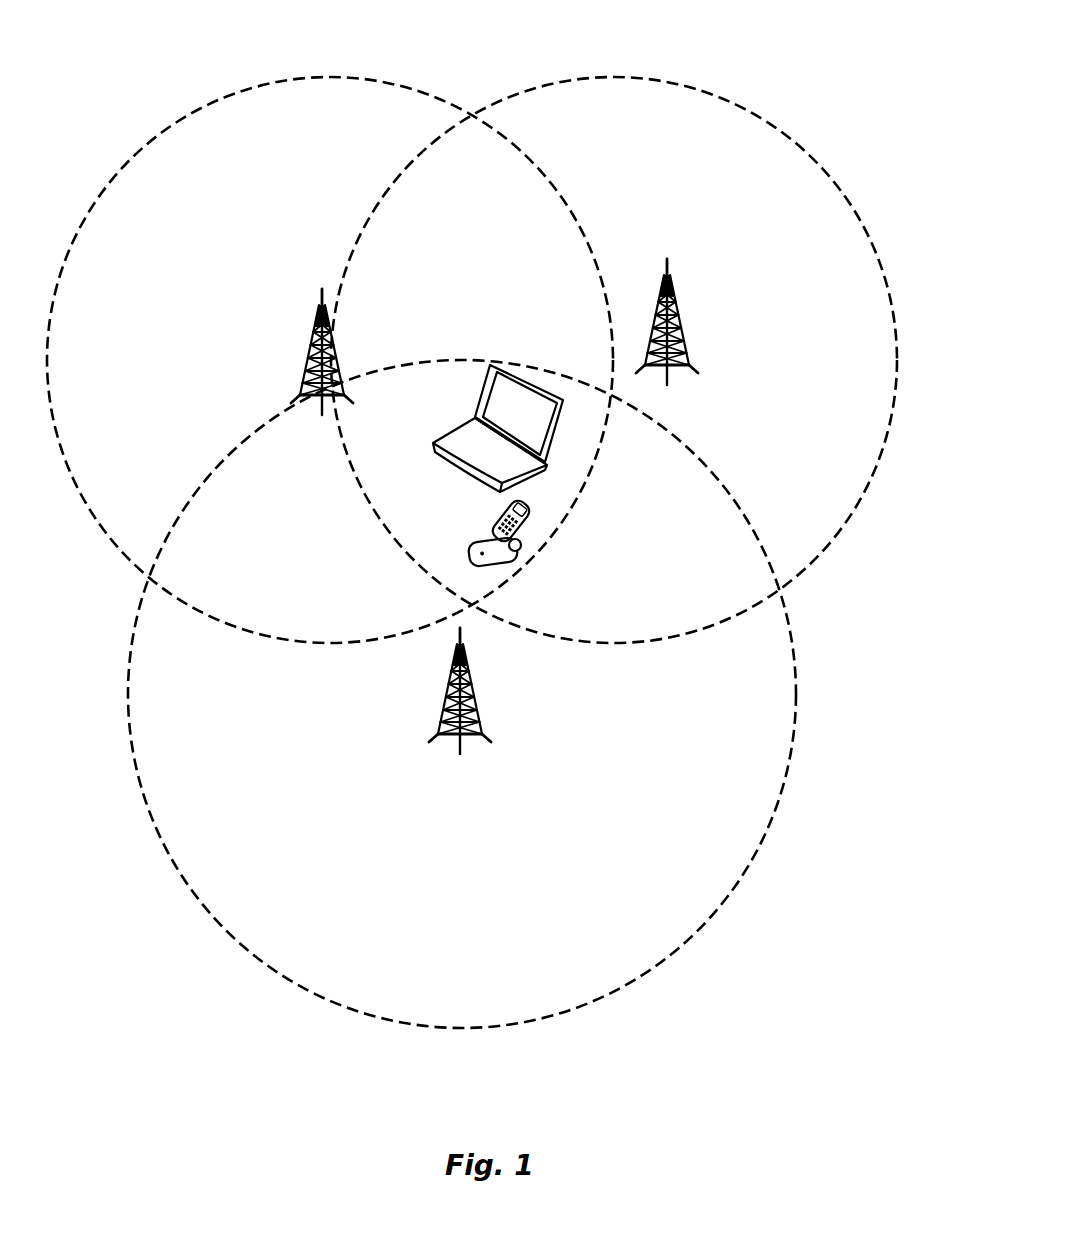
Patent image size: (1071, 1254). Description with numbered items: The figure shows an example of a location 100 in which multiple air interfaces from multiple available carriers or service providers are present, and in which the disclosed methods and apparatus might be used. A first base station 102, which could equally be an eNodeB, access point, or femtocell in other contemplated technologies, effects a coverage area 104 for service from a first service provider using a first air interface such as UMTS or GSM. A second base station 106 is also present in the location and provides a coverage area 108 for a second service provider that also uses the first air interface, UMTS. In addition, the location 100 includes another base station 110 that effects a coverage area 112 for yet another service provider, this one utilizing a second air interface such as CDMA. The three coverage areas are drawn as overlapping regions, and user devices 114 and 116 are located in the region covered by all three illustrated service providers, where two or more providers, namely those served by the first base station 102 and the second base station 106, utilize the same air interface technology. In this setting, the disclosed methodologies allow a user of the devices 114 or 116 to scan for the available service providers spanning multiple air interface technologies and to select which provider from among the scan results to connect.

The location 100 is at (171, 33).
The first base station 102 is at (310, 362).
The coverage area 104 is at (402, 83).
The second base station 106 is at (675, 317).
The coverage area 108 is at (567, 83).
The base station 110 is at (478, 716).
The coverage area 112 is at (738, 882).
The user device 114 is at (482, 390).
The user device 116 is at (478, 547).